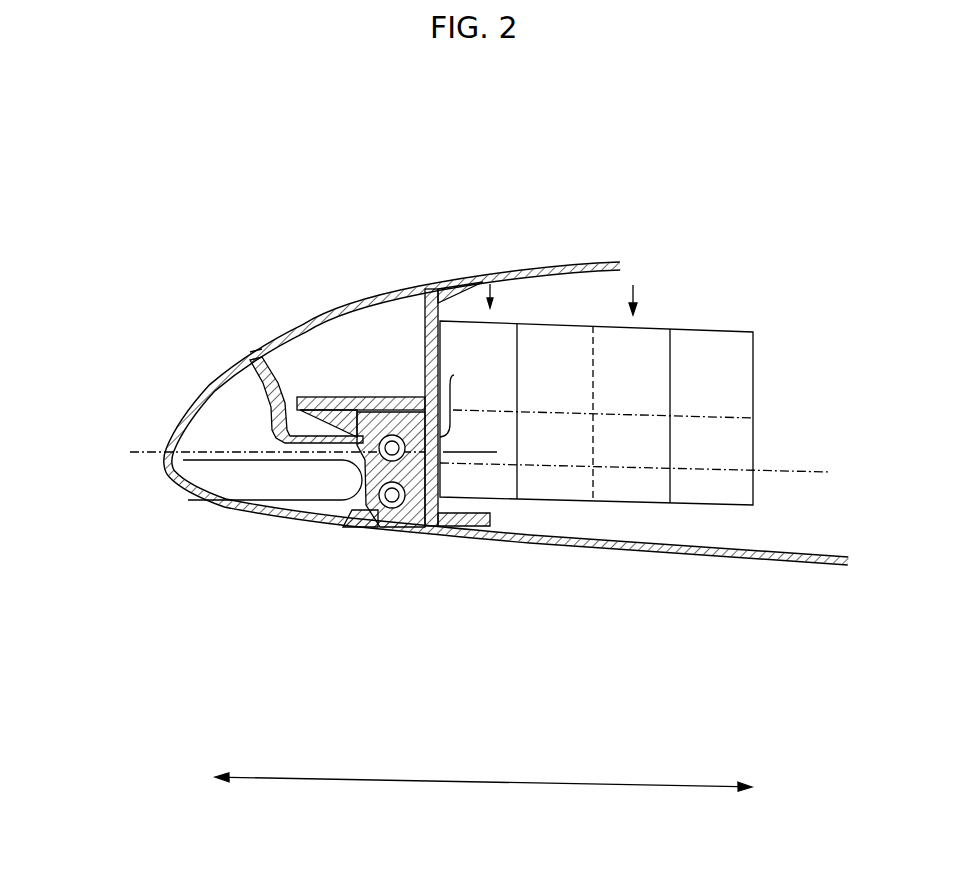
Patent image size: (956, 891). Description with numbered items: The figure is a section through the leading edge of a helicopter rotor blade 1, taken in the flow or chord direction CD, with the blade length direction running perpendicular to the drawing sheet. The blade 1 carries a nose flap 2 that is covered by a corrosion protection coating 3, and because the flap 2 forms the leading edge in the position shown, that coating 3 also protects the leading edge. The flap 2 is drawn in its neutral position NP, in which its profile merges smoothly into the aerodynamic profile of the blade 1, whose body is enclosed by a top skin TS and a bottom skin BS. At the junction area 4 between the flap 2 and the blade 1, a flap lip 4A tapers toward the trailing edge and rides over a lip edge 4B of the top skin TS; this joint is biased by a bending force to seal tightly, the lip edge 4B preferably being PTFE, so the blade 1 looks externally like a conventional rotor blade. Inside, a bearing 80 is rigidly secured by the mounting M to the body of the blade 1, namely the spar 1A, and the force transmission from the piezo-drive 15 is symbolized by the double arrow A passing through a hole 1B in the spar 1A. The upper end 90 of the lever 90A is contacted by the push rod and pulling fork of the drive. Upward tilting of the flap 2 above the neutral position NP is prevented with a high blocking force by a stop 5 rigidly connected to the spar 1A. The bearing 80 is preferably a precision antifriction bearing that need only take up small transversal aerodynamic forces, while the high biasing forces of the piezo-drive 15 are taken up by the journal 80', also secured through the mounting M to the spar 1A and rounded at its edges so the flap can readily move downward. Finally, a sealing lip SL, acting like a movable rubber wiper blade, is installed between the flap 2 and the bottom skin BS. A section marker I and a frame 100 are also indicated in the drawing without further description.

The helicopter rotor blade 1 is at (799, 220).
The spar 1A is at (470, 527).
The hole 1B is at (462, 398).
The nose flap 2 is at (200, 482).
The corrosion protection coating 3 is at (252, 507).
The junction area 4 is at (273, 267).
The flap lip 4A is at (260, 343).
The lip edge 4B is at (290, 345).
The stop 5 is at (253, 363).
The piezo-drive 15 is at (643, 463).
The bearing 80 is at (405, 613).
The journal 80' is at (377, 486).
The upper end of the lever 90 is at (391, 440).
The lever 90A is at (363, 480).
The leading edge assembly 100 is at (575, 297).
The top skin TS is at (540, 270).
The bottom skin BS is at (622, 546).
The neutral position NP is at (221, 430).
The double arrow A is at (477, 451).
The section line I is at (636, 292).
The mounting M is at (423, 530).
The sealing lip SL is at (395, 508).
The chord direction CD is at (440, 783).